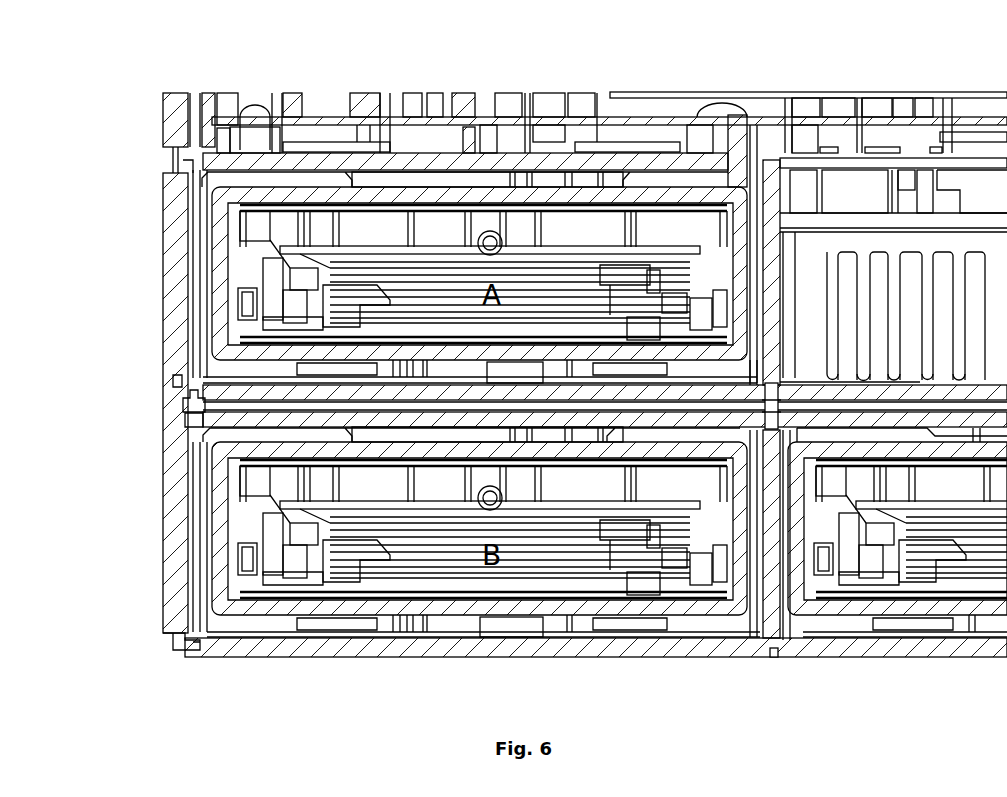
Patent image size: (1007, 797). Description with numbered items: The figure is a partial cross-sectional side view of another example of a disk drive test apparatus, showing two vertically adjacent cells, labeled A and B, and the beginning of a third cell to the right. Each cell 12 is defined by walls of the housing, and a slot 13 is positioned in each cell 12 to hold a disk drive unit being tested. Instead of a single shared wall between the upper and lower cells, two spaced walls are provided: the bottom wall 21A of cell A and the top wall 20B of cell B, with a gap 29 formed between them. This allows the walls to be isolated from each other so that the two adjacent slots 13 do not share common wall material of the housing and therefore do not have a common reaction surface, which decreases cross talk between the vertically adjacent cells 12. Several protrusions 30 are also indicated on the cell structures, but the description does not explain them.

The cell 12 is at (200, 355).
The slot 13 is at (238, 196).
The bottom wall of cell A 21A is at (255, 395).
The gap 29 is at (245, 407).
The top wall of cell B 20B is at (245, 418).
The tab / protrusion 30 is at (470, 180).